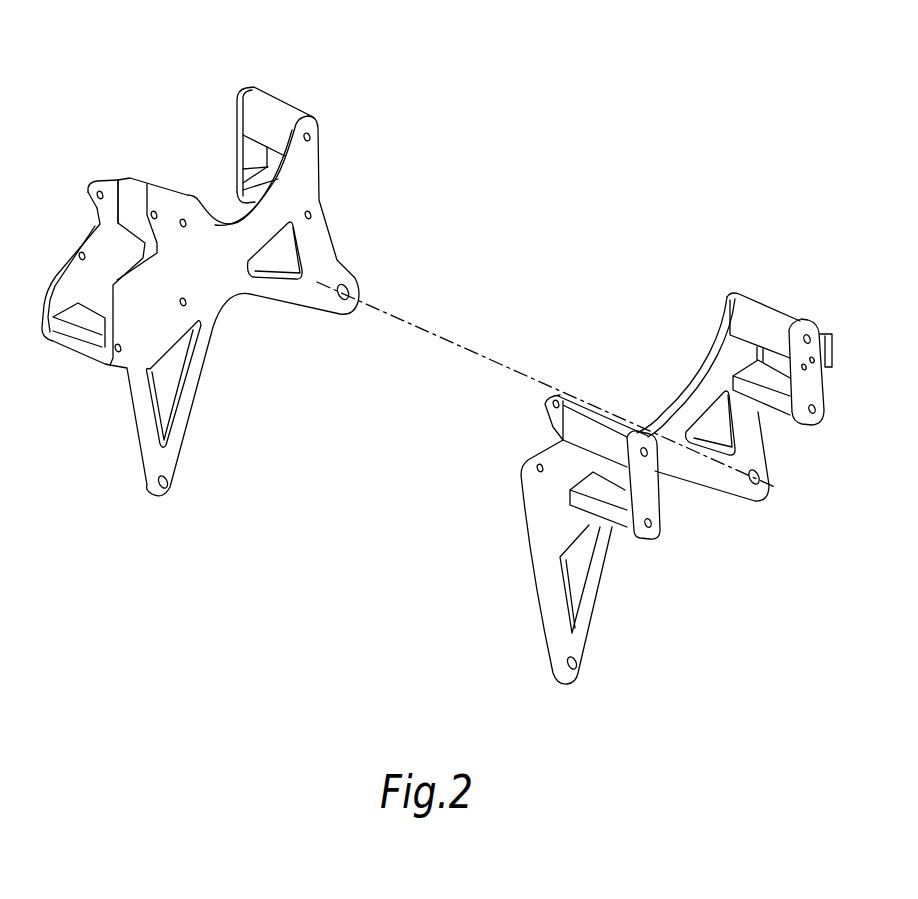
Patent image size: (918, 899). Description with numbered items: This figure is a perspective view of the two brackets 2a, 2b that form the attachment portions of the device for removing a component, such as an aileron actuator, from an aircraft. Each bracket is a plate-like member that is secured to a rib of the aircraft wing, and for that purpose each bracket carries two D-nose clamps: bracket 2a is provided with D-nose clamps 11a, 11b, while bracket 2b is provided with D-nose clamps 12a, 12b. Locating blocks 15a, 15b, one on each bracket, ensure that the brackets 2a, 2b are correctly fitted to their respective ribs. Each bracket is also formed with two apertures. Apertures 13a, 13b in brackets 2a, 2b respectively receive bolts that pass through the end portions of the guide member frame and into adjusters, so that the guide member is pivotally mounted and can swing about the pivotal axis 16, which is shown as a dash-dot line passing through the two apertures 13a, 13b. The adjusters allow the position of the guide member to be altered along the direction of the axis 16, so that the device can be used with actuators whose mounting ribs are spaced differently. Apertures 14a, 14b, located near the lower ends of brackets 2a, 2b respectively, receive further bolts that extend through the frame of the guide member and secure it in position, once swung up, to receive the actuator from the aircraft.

The bracket 2a is at (74, 243).
The bracket 2b is at (603, 583).
The D-nose clamp 11a is at (148, 188).
The D-nose clamp 11b is at (289, 100).
The D-nose clamp 12a is at (604, 427).
The D-nose clamp 12b is at (773, 299).
The aperture 13a is at (350, 289).
The aperture 13b is at (762, 488).
The aperture 14a is at (170, 485).
The aperture 14b is at (577, 665).
The locating block 15a is at (254, 152).
The locating block 15b is at (829, 355).
The pivotal axis 16 is at (392, 316).